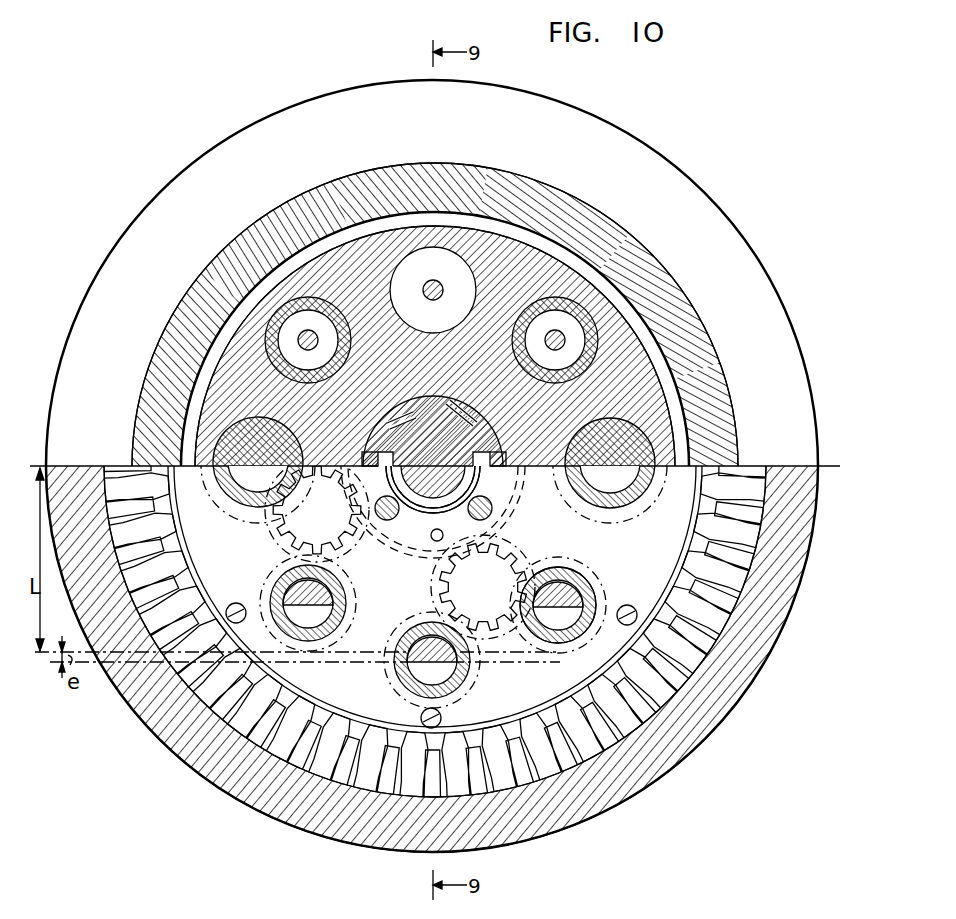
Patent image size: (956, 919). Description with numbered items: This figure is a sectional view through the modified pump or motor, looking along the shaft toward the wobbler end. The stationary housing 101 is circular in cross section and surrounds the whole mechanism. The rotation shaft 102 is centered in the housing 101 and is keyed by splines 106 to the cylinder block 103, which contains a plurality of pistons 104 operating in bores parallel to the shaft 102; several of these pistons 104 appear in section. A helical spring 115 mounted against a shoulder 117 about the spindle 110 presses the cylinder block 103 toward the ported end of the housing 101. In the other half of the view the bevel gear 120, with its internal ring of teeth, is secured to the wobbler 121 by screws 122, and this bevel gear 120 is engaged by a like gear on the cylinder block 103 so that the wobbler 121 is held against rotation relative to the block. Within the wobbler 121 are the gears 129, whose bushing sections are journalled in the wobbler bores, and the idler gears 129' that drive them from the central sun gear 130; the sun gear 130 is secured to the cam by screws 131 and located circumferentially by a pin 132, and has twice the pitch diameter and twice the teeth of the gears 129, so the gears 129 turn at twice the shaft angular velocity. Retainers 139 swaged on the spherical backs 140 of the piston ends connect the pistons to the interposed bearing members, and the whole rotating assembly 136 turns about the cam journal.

The stationary housing 101 is at (171, 181).
The rotation shaft 102 is at (388, 486).
The cylinder block 103 is at (622, 330).
The piston 104 is at (348, 343).
The splines 106 is at (466, 396).
The spindle 110 is at (450, 480).
The helical spring 115 is at (425, 503).
The shoulder 117 is at (478, 480).
The bevel gear 120 is at (216, 672).
The wobbler 121 is at (592, 655).
The screws 122 is at (640, 596).
The gear 129 is at (370, 567).
The idler gear 129' is at (454, 587).
The sun gear 130 is at (495, 514).
The screws 131 is at (392, 516).
The pin 132 is at (458, 535).
The assembly 136 is at (274, 754).
The retainer 139 is at (397, 672).
The spherical back 140 is at (586, 578).